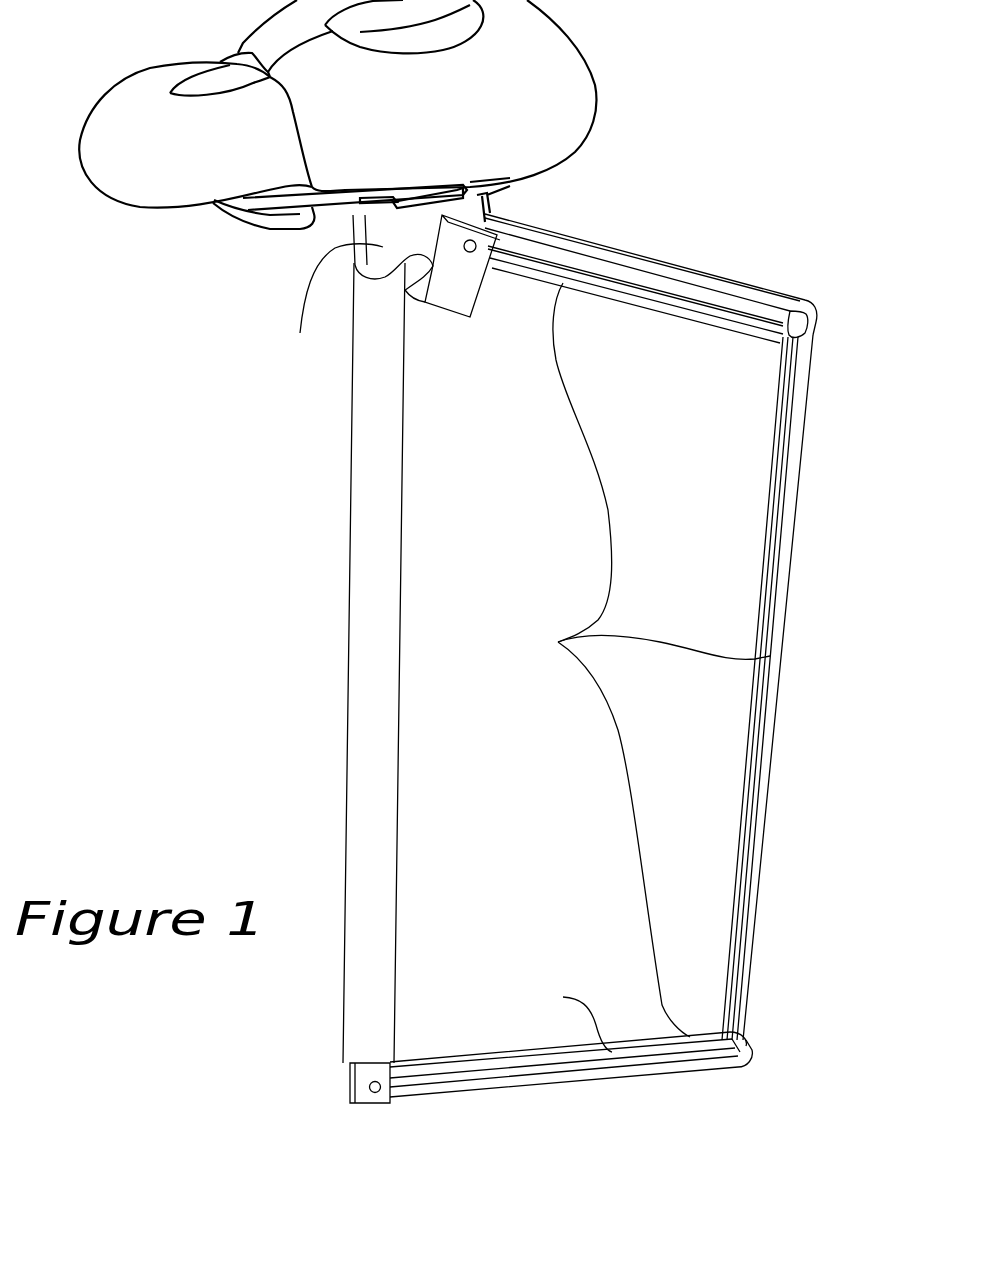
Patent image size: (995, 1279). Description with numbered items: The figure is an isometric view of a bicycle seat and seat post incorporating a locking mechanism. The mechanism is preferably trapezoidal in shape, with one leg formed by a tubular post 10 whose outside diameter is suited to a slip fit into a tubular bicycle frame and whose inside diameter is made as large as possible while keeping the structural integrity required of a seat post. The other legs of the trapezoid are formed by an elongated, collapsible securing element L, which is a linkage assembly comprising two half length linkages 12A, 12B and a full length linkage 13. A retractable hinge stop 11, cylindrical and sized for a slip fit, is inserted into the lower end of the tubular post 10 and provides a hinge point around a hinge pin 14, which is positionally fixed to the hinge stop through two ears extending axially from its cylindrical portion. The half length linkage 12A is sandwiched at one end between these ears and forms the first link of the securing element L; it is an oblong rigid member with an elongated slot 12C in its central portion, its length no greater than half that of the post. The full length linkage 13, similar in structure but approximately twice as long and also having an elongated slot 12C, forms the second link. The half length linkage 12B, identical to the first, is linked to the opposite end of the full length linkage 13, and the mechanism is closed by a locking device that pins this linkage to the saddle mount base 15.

The tubular post 10 is at (376, 460).
The retractable hinge stop 11 is at (350, 1077).
The half length linkage 12A is at (623, 1052).
The half length linkage 12B is at (722, 314).
The elongated slot 12C is at (527, 1067).
The full length linkage 13 is at (773, 698).
The hinge pin 14 is at (380, 1088).
The saddle mount base 15 is at (320, 280).
The collapsible securing element L is at (651, 667).